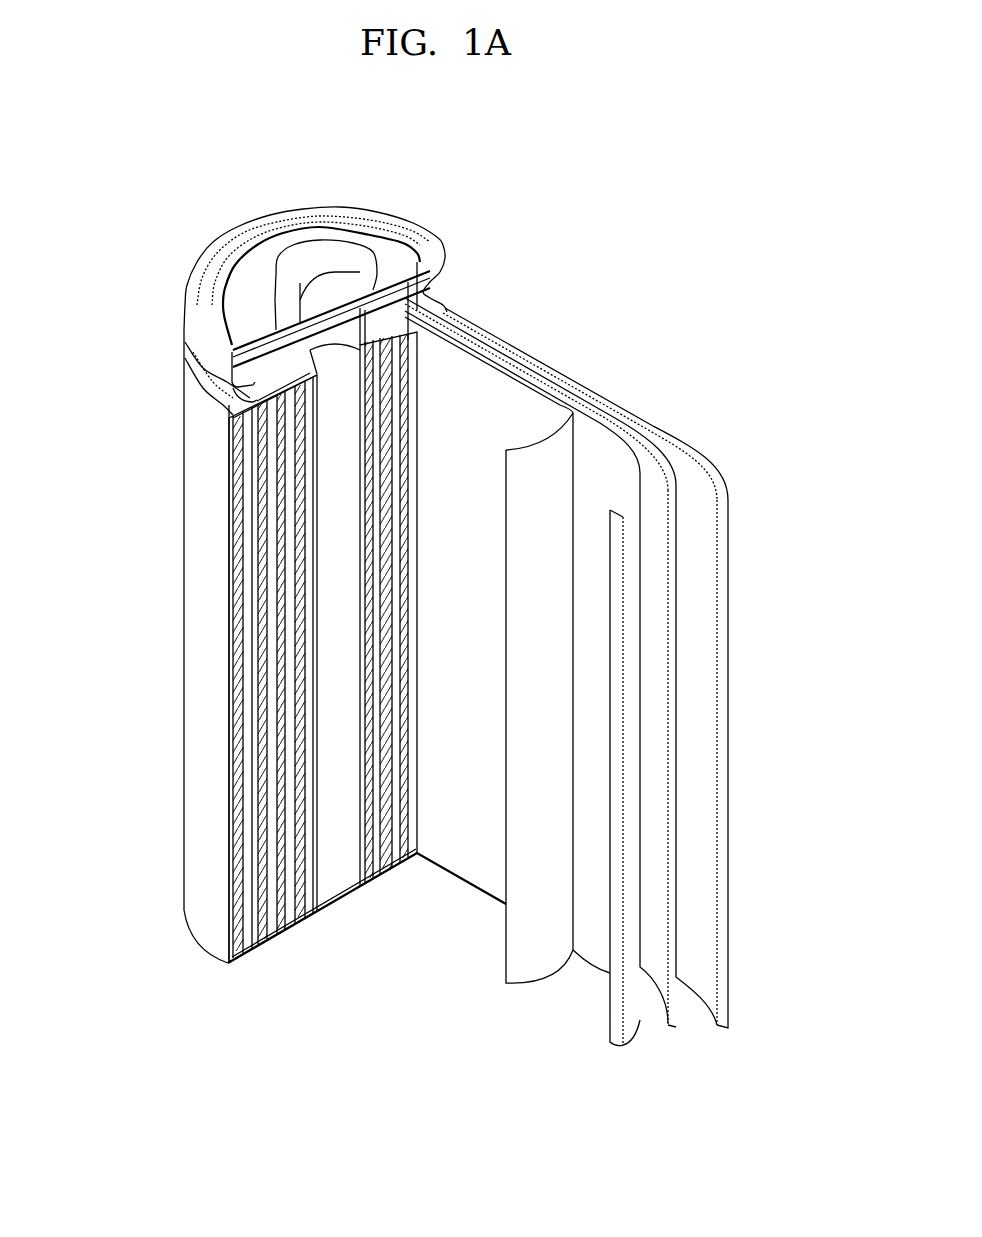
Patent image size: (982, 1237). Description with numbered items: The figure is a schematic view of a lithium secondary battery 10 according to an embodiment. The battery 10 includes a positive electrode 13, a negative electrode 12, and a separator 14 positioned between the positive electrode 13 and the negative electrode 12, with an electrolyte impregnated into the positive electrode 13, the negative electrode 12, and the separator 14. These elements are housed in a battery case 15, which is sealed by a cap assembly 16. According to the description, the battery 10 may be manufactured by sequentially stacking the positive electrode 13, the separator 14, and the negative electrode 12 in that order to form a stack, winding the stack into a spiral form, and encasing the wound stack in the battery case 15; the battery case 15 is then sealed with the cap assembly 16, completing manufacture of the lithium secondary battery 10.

The lithium secondary battery 10 is at (545, 246).
The negative electrode 12 is at (722, 482).
The positive electrode 13 is at (603, 427).
The separator 14 is at (517, 373).
The battery case 15 is at (193, 575).
The cap assembly 16 is at (315, 255).